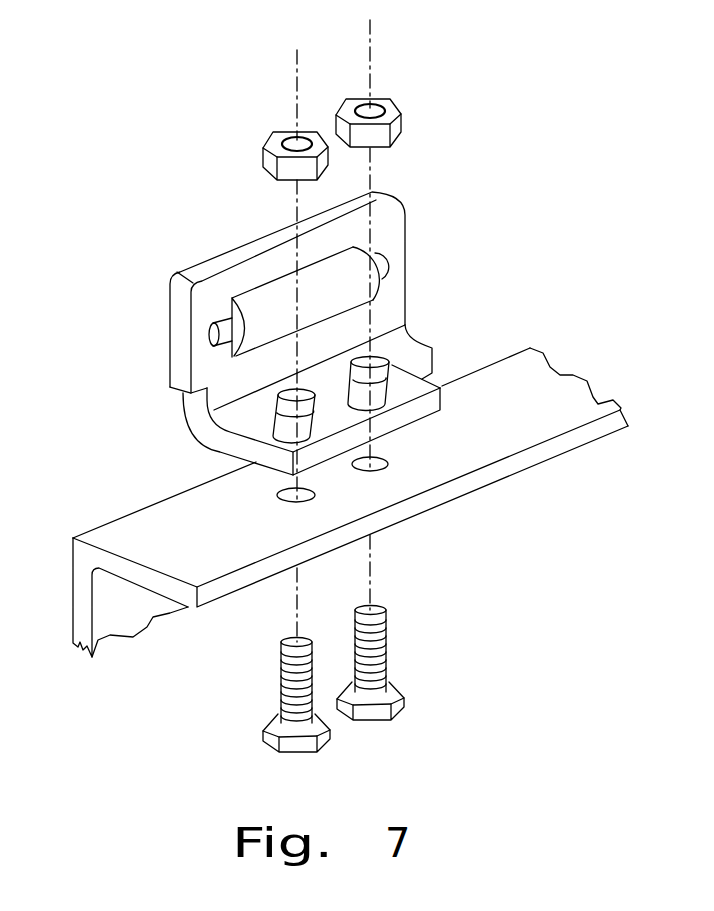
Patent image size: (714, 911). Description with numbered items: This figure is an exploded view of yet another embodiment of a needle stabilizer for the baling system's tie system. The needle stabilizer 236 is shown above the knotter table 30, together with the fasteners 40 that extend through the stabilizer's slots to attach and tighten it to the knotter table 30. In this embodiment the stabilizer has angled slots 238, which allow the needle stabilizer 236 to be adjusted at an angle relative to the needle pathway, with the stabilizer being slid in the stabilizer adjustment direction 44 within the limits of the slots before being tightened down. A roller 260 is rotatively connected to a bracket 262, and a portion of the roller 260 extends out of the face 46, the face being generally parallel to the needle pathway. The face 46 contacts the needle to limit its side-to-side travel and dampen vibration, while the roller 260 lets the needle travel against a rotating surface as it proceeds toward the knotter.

The knotter table 30 is at (218, 546).
The fasteners 40 is at (429, 651).
The stabilizer adjustment direction 44 is at (163, 427).
The face 46 is at (130, 281).
The needle stabilizer 236 is at (444, 240).
The angled slots 238 is at (270, 411).
The roller 260 is at (332, 278).
The bracket 262 is at (405, 215).